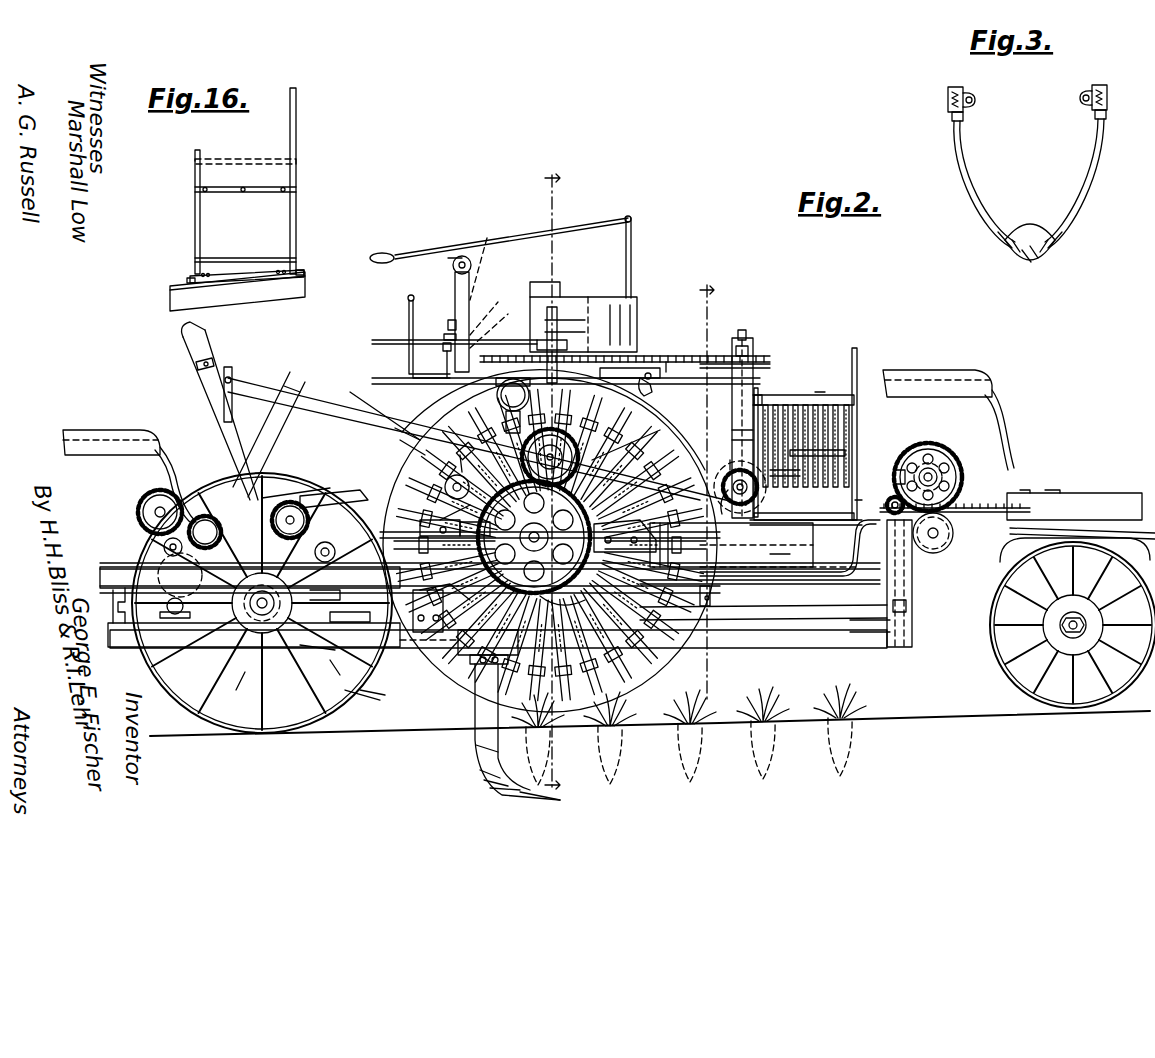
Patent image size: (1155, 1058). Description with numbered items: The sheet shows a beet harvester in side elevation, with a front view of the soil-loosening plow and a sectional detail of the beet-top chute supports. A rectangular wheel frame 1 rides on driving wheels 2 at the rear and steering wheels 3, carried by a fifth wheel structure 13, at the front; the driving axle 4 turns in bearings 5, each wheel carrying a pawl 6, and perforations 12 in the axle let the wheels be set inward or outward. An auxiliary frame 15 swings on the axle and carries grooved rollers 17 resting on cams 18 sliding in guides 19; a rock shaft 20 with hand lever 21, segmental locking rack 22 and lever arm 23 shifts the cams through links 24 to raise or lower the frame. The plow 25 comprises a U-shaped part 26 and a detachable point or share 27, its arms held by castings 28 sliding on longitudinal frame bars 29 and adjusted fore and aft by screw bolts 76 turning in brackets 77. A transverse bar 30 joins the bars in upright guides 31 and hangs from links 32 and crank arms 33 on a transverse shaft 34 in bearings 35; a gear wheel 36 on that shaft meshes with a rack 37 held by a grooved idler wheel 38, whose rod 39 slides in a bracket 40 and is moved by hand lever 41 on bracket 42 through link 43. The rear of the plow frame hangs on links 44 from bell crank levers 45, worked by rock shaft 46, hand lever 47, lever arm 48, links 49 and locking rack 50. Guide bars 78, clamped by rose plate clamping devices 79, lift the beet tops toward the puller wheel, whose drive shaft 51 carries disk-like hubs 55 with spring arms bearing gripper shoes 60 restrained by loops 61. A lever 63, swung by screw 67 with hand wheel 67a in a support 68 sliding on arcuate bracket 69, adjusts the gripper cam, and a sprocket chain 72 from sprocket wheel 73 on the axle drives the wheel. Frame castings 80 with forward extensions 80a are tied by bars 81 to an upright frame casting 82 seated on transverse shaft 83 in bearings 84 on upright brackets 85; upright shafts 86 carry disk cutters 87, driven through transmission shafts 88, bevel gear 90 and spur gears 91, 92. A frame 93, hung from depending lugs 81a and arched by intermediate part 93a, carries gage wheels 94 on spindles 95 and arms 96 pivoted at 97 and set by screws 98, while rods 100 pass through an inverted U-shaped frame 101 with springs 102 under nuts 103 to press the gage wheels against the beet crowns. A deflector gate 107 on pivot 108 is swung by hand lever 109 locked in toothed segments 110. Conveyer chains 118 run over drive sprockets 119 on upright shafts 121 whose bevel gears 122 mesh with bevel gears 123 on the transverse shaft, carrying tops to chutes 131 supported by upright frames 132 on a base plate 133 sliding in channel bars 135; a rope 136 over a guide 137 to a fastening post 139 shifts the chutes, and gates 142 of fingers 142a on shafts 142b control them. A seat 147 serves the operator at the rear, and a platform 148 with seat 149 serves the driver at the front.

In FIG. 2, the frame bar 1 is at (828, 586).
In FIG. 2, the frame 2 is at (360, 680).
In FIG. 2, the rear wheel axle 3 is at (995, 652).
In FIG. 2, the axle 4 is at (280, 602).
In FIG. 2, the drive wheel 5 is at (265, 634).
In FIG. 2, the section line 6 is at (551, 469).
In FIG. 2, the cable 12 is at (352, 432).
In FIG. 2, the rear wheel 13 is at (1105, 530).
In FIG. 16, the plate / section line 15 is at (241, 294).
In FIG. 2, the plate / section line 15 is at (731, 483).
In FIG. 2, the bracket 17 is at (625, 536).
In FIG. 2, the hood strap 18 is at (812, 540).
In FIG. 2, the bar 19 is at (752, 584).
In FIG. 2, the bearing 20 is at (175, 615).
In FIG. 2, the pinion 21 is at (336, 545).
In FIG. 2, the frame bracket 22 is at (114, 604).
In FIG. 2, the gear 23 is at (180, 575).
In FIG. 2, the bracket 24 is at (742, 560).
In FIG. 3, the plow shoe 25 is at (1032, 226).
In FIG. 2, the plow shoe 25 is at (484, 770).
In FIG. 3, the plow arm 26 is at (968, 160).
In FIG. 2, the plow arm 26 is at (490, 740).
In FIG. 3, the plow point 27 is at (1032, 245).
In FIG. 2, the plow point 27 is at (550, 798).
In FIG. 3, the clamp 28 is at (952, 114).
In FIG. 2, the clamp 28 is at (459, 647).
In FIG. 3, the lower frame bar / clip 29 is at (946, 97).
In FIG. 2, the lower frame bar / clip 29 is at (806, 645).
In FIG. 2, the bar 30 is at (912, 634).
In FIG. 2, the post 31 is at (912, 584).
In FIG. 2, the bolt 32 is at (912, 598).
In FIG. 2, the pinion 33 is at (892, 508).
In FIG. 2, the hub 34 is at (940, 470).
In FIG. 2, the bracket 35 is at (898, 468).
In FIG. 2, the gear 36 is at (940, 450).
In FIG. 2, the rack 37 is at (1000, 494).
In FIG. 2, the pulley 38 is at (940, 536).
In FIG. 2, the rod 39 is at (806, 568).
In FIG. 2, the block 40 is at (441, 611).
In FIG. 2, the lever 41 is at (225, 418).
In FIG. 2, the gear 42 is at (290, 520).
In FIG. 2, the link 43 is at (458, 602).
In FIG. 2, the bracket 44 is at (350, 619).
In FIG. 2, the arm 45 is at (364, 495).
In FIG. 2, the pinion 46 is at (165, 545).
In FIG. 2, the rod 47 is at (258, 428).
In FIG. 2, the gear 48 is at (190, 528).
In FIG. 2, the arm 49 is at (328, 486).
In FIG. 2, the gear 50 is at (157, 503).
In FIG. 2, the slat 51 is at (533, 509).
In FIG. 2, the sprocket 55 is at (534, 537).
In FIG. 2, the drum 60 is at (452, 400).
In FIG. 2, the slat 61 is at (626, 460).
In FIG. 2, the bracket 63 is at (426, 545).
In FIG. 2, the rim 67 is at (395, 428).
In FIG. 2, the rim flange 67a is at (398, 438).
In FIG. 2, the roller 68 is at (445, 480).
In FIG. 2, the gear 69 is at (524, 457).
In FIG. 2, the brace 72 is at (338, 650).
In FIG. 2, the spoke 73 is at (250, 660).
In FIG. 2, the bar 76 is at (368, 708).
In FIG. 2, the bar 77 is at (333, 680).
In FIG. 2, the beets 78 is at (648, 714).
In FIG. 2, the bracket 79 is at (740, 600).
In FIG. 2, the rack bar 80 is at (650, 380).
In FIG. 2, the rack pin 80a is at (710, 366).
In FIG. 2, the rack 81 is at (712, 354).
In FIG. 2, the rack end 81a is at (712, 356).
In FIG. 2, the post 82 is at (755, 362).
In FIG. 2, the pinion 83 is at (758, 492).
In FIG. 2, the arm 84 is at (728, 480).
In FIG. 2, the bracket 85 is at (740, 470).
In FIG. 2, the bracket 86 is at (538, 296).
In FIG. 2, the pulley 87 is at (512, 380).
In FIG. 2, the nut 88 is at (434, 360).
In FIG. 2, the rod 90 is at (557, 330).
In FIG. 2, the cable 91 is at (381, 404).
In FIG. 2, the chain 92 is at (565, 598).
In FIG. 2, the bracket 93 is at (408, 362).
In FIG. 2, the pin 93a is at (407, 305).
In FIG. 2, the bearing 94 is at (498, 380).
In FIG. 2, the rod 95 is at (540, 338).
In FIG. 2, the collar 96 is at (446, 334).
In FIG. 2, the bar 97 is at (450, 339).
In FIG. 2, the collar 98 is at (452, 320).
In FIG. 2, the link 100 is at (514, 300).
In FIG. 2, the pivot 101 is at (452, 268).
In FIG. 2, the link 102 is at (524, 262).
In FIG. 2, the lever post 103 is at (490, 236).
In FIG. 2, the box 107 is at (625, 310).
In FIG. 2, the post 108 is at (632, 250).
In FIG. 2, the lever 109 is at (560, 228).
In FIG. 2, the lever handle 110 is at (458, 256).
In FIG. 2, the bar 118 is at (732, 360).
In FIG. 2, the cap 119 is at (748, 350).
In FIG. 2, the cap 121 is at (752, 348).
In FIG. 2, the gear 122 is at (740, 460).
In FIG. 2, the bar 123 is at (800, 472).
In FIG. 16, the cross bar 131 is at (280, 173).
In FIG. 2, the cross bar 131 is at (835, 426).
In FIG. 16, the upright 132 is at (195, 212).
In FIG. 16, the plate 133 is at (258, 254).
In FIG. 2, the plate 133 is at (812, 520).
In FIG. 16, the clip 135 is at (190, 281).
In FIG. 2, the clip 135 is at (780, 520).
In FIG. 2, the cable 136 is at (310, 392).
In FIG. 2, the plate 137 is at (756, 534).
In FIG. 2, the post 139 is at (230, 368).
In FIG. 2, the cage 142 is at (844, 392).
In FIG. 2, the cage rail 142a is at (836, 360).
In FIG. 2, the cage post 142b is at (856, 350).
In FIG. 2, the seat 147 is at (100, 432).
In FIG. 2, the beam 148 is at (1076, 492).
In FIG. 2, the seat 149 is at (942, 372).